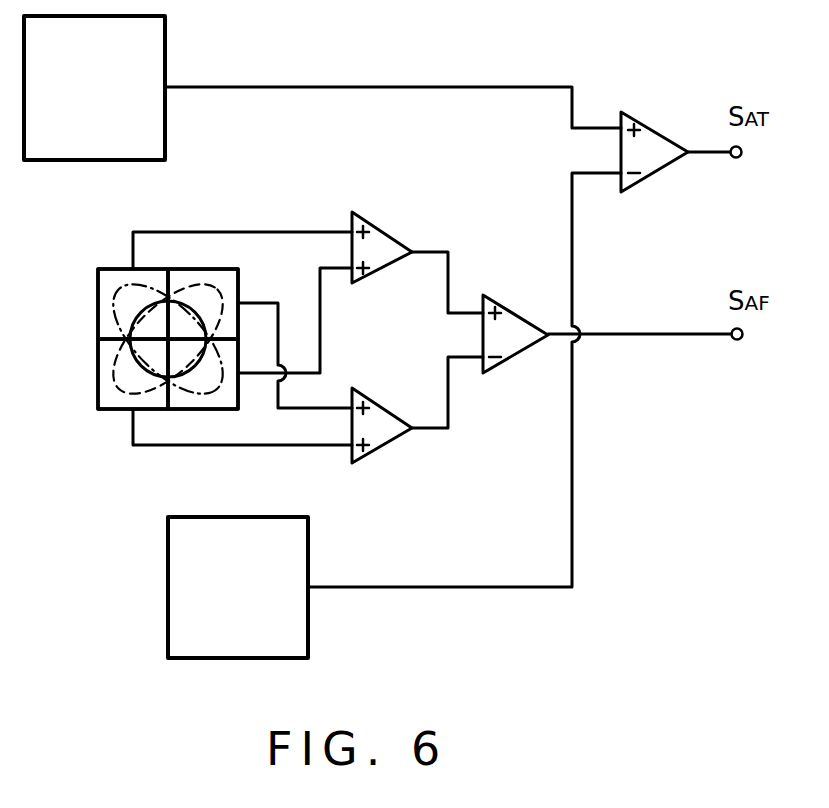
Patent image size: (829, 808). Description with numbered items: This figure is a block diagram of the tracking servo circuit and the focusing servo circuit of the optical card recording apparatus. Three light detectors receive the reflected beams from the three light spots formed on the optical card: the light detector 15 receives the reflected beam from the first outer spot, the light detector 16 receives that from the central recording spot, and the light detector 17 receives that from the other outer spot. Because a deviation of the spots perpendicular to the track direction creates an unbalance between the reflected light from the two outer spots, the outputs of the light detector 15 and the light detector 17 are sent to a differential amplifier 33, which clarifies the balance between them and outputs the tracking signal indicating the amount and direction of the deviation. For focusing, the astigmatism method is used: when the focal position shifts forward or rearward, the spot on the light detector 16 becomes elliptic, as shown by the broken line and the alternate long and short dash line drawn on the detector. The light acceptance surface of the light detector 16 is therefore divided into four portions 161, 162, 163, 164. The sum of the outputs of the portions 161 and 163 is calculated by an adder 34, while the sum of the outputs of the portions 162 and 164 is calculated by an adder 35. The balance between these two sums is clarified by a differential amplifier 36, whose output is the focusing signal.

The light detector 15 is at (166, 30).
The light detector 16 is at (161, 341).
The portion of light acceptance surface 161 is at (97, 278).
The portion of light acceptance surface 162 is at (238, 277).
The portion of light acceptance surface 163 is at (200, 410).
The portion of light acceptance surface 164 is at (97, 398).
The light detector 17 is at (308, 536).
The differential amplifier 33 is at (655, 120).
The adder 34 is at (385, 232).
The adder 35 is at (385, 408).
The differential amplifier 36 is at (520, 313).